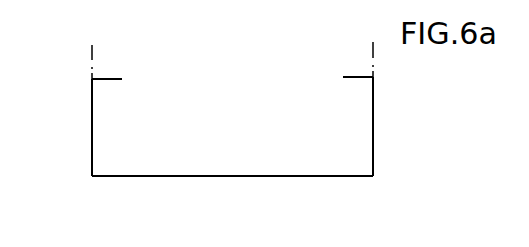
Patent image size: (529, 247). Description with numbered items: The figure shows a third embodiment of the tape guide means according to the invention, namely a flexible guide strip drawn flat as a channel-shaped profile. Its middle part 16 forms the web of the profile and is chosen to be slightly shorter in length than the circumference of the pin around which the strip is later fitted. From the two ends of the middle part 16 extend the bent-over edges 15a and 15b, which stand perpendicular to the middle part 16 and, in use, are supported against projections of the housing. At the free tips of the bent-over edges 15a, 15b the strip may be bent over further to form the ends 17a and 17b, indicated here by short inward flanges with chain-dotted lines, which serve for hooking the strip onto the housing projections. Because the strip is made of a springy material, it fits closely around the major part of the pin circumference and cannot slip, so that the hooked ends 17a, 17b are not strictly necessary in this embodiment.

The middle part 16 is at (192, 177).
The bent-over edge 15a is at (60, 127).
The bent-over edge 15b is at (374, 117).
The bent-over end 17a is at (113, 78).
The bent-over end 17b is at (353, 76).